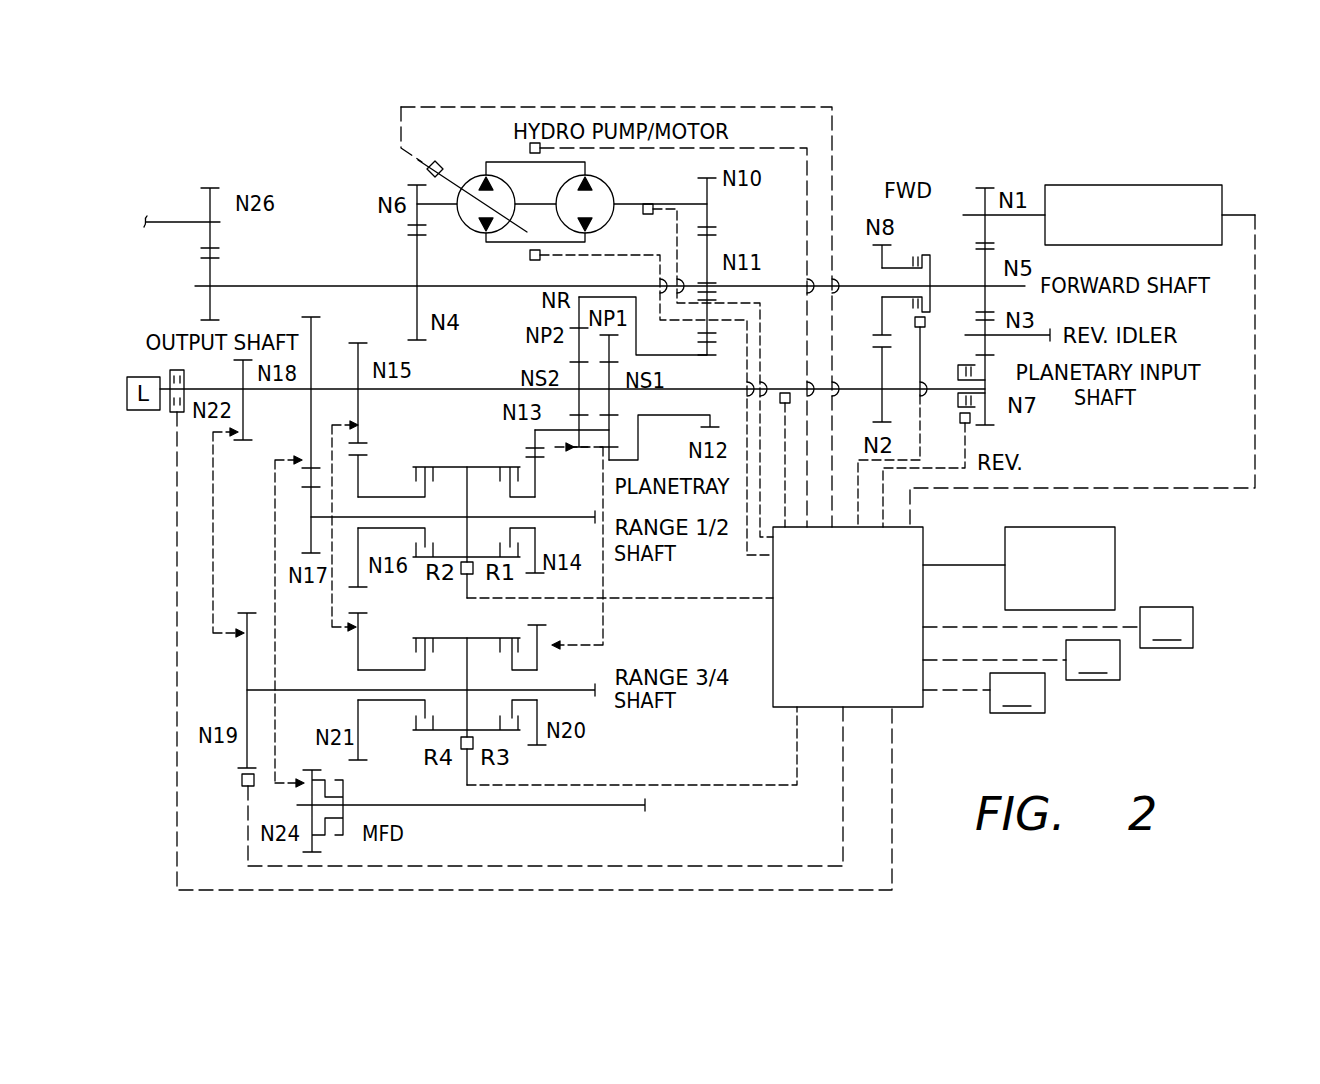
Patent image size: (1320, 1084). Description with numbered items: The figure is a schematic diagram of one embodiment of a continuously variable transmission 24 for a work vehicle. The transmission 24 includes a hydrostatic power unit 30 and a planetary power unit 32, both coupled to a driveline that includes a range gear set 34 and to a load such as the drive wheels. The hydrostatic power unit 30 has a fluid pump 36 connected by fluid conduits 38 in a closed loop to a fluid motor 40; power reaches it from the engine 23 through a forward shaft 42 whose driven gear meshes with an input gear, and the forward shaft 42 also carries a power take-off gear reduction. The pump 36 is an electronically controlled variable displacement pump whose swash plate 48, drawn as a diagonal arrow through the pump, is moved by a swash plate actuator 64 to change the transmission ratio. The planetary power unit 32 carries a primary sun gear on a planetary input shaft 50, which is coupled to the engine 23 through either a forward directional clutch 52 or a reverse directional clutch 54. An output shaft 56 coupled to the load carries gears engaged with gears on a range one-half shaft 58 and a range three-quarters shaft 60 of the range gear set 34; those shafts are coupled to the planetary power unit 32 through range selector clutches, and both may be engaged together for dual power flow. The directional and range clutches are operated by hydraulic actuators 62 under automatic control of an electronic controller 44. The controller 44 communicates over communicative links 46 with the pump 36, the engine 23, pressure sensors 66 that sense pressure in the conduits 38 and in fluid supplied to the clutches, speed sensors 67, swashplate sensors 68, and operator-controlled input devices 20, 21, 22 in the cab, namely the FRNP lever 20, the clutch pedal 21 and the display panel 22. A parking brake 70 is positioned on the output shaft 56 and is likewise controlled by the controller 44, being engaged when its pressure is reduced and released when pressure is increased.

The FRNP lever 20 is at (1133, 563).
The clutch pedal 21 is at (1060, 568).
The display panel 22 is at (1116, 568).
The engine 23 is at (1224, 197).
The continuously variable transmission 24 is at (1013, 172).
The hydrostatic power unit 30 is at (406, 164).
The planetary power unit 32 is at (497, 401).
The range gear set 34 is at (623, 605).
The fluid pump 36 is at (480, 232).
The fluid conduits 38 is at (597, 175).
The fluid motor 40 is at (614, 200).
The forward shaft 42 is at (268, 285).
The electronic controller 44 is at (926, 613).
The communicative link 46 is at (808, 188).
The swash plate 48 is at (460, 226).
The planetary input shaft 50 is at (676, 389).
The forward directional clutch 52 is at (922, 258).
The reverse directional clutch 54 is at (975, 405).
The output shaft 56 is at (297, 395).
The range 1/2 shaft 58 is at (590, 515).
The range 3/4 shaft 60 is at (292, 690).
The hydraulic actuator 62 is at (926, 323).
The swash plate actuator 64 is at (420, 165).
The pressure sensor 66 is at (528, 148).
The speed sensor 67 is at (1093, 660).
The swashplate sensor 68 is at (644, 212).
The parking brake 70 is at (186, 378).